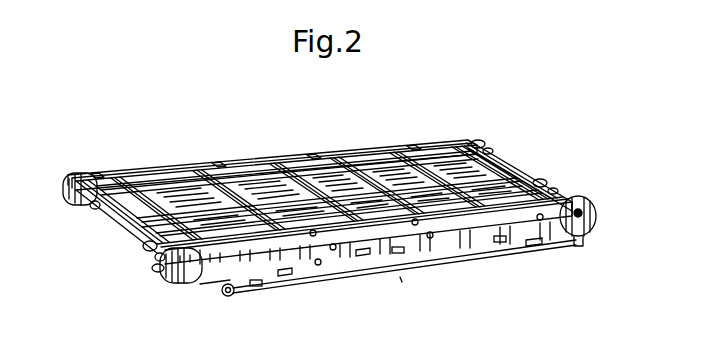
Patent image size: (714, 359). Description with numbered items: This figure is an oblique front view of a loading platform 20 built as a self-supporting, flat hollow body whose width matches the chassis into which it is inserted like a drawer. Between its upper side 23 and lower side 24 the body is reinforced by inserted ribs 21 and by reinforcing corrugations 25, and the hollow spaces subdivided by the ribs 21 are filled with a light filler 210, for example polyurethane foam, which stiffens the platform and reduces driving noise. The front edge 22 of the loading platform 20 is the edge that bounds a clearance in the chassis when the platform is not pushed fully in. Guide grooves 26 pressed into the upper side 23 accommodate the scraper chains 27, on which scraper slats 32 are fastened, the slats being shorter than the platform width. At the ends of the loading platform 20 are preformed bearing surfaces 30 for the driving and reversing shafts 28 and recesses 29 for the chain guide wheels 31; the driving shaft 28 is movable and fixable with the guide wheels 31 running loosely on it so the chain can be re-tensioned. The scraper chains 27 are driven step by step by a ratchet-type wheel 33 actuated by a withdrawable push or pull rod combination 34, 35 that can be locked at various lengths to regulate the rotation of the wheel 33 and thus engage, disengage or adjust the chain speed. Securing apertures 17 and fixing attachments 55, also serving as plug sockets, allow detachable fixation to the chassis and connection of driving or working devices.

The securing apertures 17 is at (234, 297).
The loading platform 20 is at (512, 172).
The ribs 21 is at (160, 175).
The front edge 22 is at (352, 153).
The upper side 23 is at (386, 262).
The lower side 24 is at (205, 288).
The reinforcing corrugations 25 is at (256, 288).
The guide grooves 26 is at (388, 151).
The scraper chains 27 is at (190, 174).
The driving and reversing shafts 28 is at (597, 214).
The recesses 29 is at (478, 142).
The bearing surfaces 30 is at (78, 198).
The chain guide wheels 31 is at (95, 208).
The scraper slats 32 is at (126, 176).
The ratchet-type wheel 33 is at (588, 247).
The push or pull rod combination 34 is at (285, 277).
The push or pull rod combination 35 is at (445, 262).
The fixing attachments 55 is at (98, 174).
The filler 210 is at (362, 257).